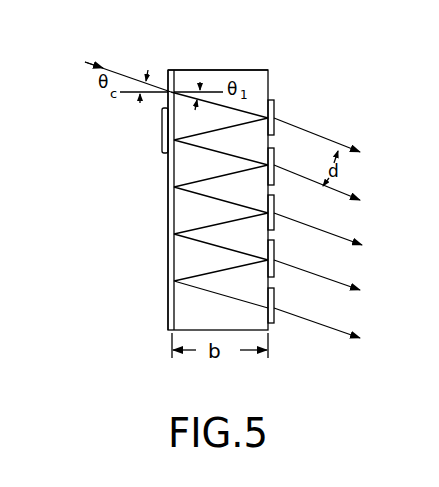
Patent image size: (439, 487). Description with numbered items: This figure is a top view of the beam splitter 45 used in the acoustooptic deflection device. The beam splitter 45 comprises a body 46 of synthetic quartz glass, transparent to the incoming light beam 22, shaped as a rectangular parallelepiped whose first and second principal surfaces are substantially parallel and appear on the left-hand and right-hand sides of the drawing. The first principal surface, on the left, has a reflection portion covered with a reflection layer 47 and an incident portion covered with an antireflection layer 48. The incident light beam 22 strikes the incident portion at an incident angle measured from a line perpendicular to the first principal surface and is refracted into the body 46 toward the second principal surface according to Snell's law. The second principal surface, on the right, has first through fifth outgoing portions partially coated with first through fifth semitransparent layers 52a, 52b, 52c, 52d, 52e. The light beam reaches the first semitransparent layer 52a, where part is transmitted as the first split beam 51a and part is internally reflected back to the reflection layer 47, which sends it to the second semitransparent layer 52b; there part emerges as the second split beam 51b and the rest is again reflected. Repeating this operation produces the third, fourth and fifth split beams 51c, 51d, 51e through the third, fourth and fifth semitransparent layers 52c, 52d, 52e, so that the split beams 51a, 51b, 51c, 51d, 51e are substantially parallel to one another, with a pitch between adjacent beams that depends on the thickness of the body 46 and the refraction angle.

The incident light beam 22 is at (86, 63).
The beam splitter 45 is at (205, 58).
The body 46 is at (232, 72).
The reflection layer 47 is at (168, 213).
The antireflection layer 48 is at (162, 110).
The first split beam 51a is at (347, 145).
The second split beam 51b is at (350, 193).
The third split beam 51c is at (350, 235).
The fourth split beam 51d is at (350, 280).
The fifth split beam 51e is at (350, 325).
The first semitransparent layer 52a is at (275, 110).
The second semitransparent layer 52b is at (275, 160).
The third semitransparent layer 52c is at (275, 210).
The fourth semitransparent layer 52d is at (275, 255).
The fifth semitransparent layer 52e is at (275, 300).